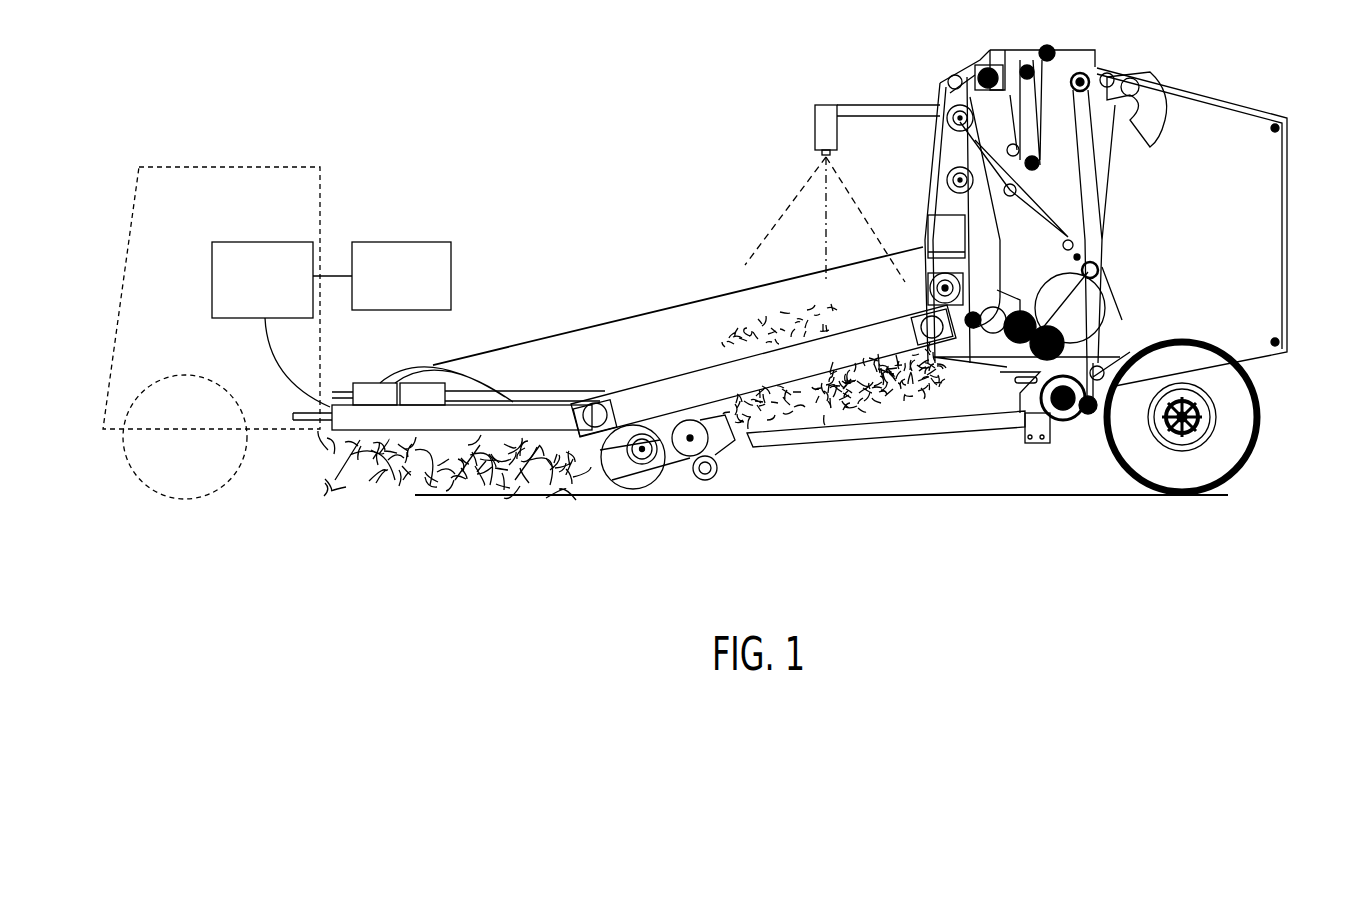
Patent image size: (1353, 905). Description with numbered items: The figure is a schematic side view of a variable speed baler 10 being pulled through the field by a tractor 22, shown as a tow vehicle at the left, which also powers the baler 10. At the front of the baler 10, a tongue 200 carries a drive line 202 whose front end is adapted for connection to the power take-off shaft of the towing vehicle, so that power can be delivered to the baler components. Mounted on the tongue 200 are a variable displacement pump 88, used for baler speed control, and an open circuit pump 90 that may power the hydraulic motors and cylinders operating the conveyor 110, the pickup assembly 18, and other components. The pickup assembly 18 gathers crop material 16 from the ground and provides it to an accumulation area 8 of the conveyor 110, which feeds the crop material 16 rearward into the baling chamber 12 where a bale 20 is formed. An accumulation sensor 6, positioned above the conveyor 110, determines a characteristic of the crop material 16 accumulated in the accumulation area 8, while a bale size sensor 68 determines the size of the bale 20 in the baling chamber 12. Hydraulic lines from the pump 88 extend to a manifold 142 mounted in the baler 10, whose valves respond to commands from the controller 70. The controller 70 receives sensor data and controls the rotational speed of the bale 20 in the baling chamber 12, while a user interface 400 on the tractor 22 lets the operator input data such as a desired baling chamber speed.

The accumulation sensor 6 is at (825, 107).
The accumulation area 8 is at (745, 337).
The variable speed baler 10 is at (1117, 262).
The baling chamber 12 is at (1258, 215).
The crop material 16 is at (385, 487).
The pickup assembly 18 is at (663, 480).
The bale 20 is at (1105, 305).
The tractor 22 is at (322, 196).
The bale size sensor 68 is at (1003, 187).
The controller 70 is at (407, 288).
The variable displacement pump 88 is at (364, 385).
The open circuit pump 90 is at (428, 398).
The conveyor 110 is at (850, 437).
The manifold 142 is at (962, 250).
The tongue 200 is at (660, 392).
The drive line 202 is at (311, 422).
The user interface 400 is at (268, 289).